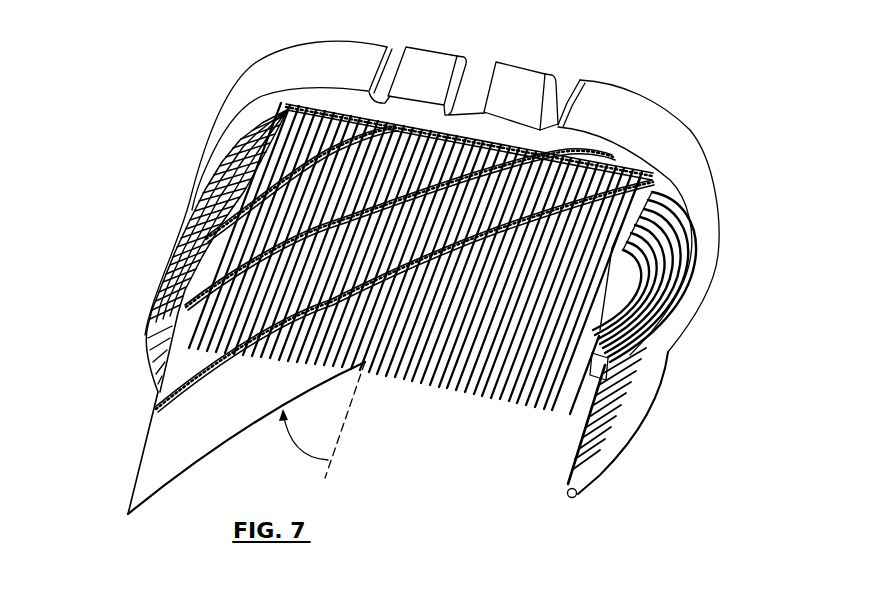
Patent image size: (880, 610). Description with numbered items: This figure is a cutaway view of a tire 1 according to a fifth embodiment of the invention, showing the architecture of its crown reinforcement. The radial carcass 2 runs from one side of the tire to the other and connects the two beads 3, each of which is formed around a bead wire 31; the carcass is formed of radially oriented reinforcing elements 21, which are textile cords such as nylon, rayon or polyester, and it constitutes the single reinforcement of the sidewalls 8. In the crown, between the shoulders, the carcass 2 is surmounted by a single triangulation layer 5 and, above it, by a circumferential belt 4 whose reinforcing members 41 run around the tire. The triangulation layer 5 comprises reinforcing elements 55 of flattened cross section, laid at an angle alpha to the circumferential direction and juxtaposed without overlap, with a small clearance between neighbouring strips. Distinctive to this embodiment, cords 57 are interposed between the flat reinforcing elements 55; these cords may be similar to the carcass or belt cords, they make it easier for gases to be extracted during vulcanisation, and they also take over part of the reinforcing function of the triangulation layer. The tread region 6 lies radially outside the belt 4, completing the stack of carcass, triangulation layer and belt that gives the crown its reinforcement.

The stator segment 1 is at (703, 76).
The carcass reinforcement 2 is at (85, 208).
The reinforcing elements 21 is at (182, 251).
The beads 3 is at (620, 487).
The bead wires 31 is at (566, 494).
The belt 4 is at (463, 443).
The end face lines 41 is at (482, 386).
The triangulation layer 5 is at (128, 80).
The reinforcing elements 55 is at (253, 121).
The cords 57 is at (158, 392).
The mounting tabs 6 is at (513, 76).
The sidewalls 8 is at (706, 232).